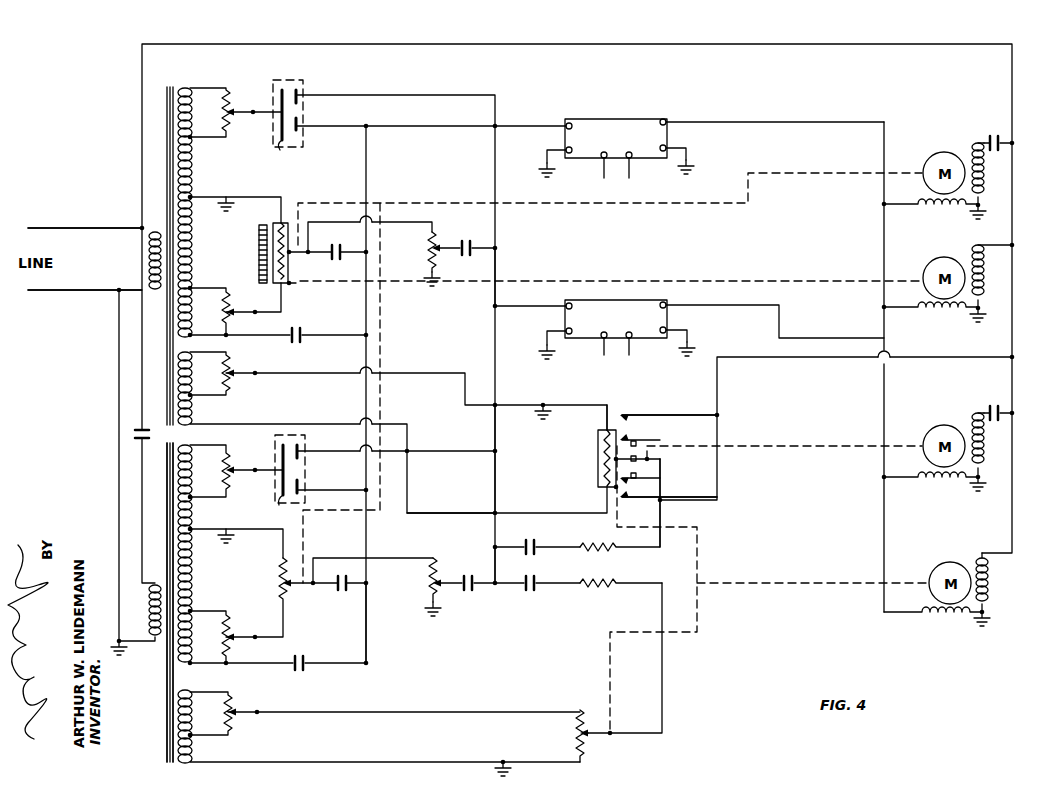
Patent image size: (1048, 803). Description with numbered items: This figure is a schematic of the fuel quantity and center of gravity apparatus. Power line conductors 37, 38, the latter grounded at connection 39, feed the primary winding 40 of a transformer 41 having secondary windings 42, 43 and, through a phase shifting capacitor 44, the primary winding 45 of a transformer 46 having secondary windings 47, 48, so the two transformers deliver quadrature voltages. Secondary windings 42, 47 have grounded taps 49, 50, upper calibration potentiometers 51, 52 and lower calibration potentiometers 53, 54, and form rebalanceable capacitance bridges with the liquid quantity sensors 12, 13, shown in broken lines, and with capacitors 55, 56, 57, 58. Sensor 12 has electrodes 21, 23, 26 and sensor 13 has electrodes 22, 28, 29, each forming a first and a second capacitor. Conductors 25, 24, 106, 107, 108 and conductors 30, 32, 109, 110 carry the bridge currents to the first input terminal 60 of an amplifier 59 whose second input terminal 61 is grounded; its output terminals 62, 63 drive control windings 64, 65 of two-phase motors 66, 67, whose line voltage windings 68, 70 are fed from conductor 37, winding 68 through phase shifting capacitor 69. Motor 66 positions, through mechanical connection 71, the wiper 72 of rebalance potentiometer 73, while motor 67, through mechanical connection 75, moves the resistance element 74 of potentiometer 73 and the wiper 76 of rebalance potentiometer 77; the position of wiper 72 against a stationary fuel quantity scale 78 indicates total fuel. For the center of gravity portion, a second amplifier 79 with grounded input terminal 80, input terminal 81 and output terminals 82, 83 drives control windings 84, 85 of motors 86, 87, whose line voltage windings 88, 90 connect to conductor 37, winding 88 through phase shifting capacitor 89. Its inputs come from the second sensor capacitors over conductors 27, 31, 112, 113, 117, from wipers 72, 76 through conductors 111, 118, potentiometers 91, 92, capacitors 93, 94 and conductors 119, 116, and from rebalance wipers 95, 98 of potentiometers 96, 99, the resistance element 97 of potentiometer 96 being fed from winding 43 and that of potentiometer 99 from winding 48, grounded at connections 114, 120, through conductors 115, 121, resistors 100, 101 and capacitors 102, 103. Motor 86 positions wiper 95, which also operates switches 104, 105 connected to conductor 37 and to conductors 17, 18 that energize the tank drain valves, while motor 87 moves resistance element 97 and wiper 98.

The liquid quantity sensor 12 is at (312, 84).
The liquid quantity sensor 13 is at (316, 448).
The electrical conductor 17 is at (666, 444).
The electrical conductor 18 is at (670, 478).
The electrode 21 is at (289, 152).
The electrode 22 is at (272, 484).
The electrode 23 is at (304, 124).
The conductor 24 is at (322, 128).
The conductor 25 is at (242, 114).
The electrode 26 is at (296, 80).
The conductor 27 is at (361, 95).
The electrode 28 is at (310, 490).
The electrode 29 is at (310, 452).
The conductor 30 is at (248, 470).
The conductor 31 is at (426, 452).
The conductor 32 is at (344, 488).
The power line conductor 37 is at (42, 228).
The power line conductor 38 is at (42, 290).
The ground connection 39 is at (124, 648).
The primary winding 40 is at (148, 255).
The transformer 41 is at (163, 82).
The first secondary winding 42 is at (191, 96).
The second secondary winding 43 is at (196, 418).
The phase shifting capacitor 44 is at (132, 432).
The primary winding 45 is at (148, 614).
The transformer 46 is at (160, 690).
The first secondary winding 47 is at (190, 450).
The second secondary winding 48 is at (196, 740).
The tap 49 is at (226, 197).
The tap 50 is at (224, 529).
The calibration potentiometer 51 is at (233, 90).
The calibration potentiometer 52 is at (238, 454).
The calibration potentiometer 53 is at (238, 290).
The calibration potentiometer 54 is at (232, 628).
The capacitor 55 is at (335, 252).
The capacitor 56 is at (310, 328).
The capacitor 57 is at (342, 590).
The capacitor 58 is at (306, 661).
The amplifier 59 is at (610, 118).
The first input terminal 60 is at (566, 124).
The second input terminal 61 is at (566, 148).
The output terminal 62 is at (664, 148).
The output terminal 63 is at (666, 120).
The control winding 64 is at (922, 208).
The control winding 65 is at (926, 312).
The two phase motor 66 is at (940, 150).
The two phase motor 67 is at (929, 262).
The line voltage winding 68 is at (978, 194).
The phase shifting capacitor 69 is at (987, 140).
The line voltage winding 70 is at (978, 298).
The mechanical connection 71 is at (531, 206).
The movable wiper 72 is at (296, 252).
The rebalance potentiometer 73 is at (286, 212).
The resistance element 74 is at (296, 283).
The mechanical connection 75 is at (538, 280).
The potentiometer wiper 76 is at (292, 586).
The rebalance potentiometer 77 is at (292, 552).
The fuel quantity scale 78 is at (258, 250).
The second amplifier 79 is at (610, 300).
The input terminal 80 is at (568, 332).
The second input terminal 81 is at (565, 306).
The output terminal 82 is at (666, 330).
The output terminal 83 is at (666, 305).
The control winding 84 is at (948, 482).
The control winding 85 is at (948, 620).
The two phase motor 86 is at (940, 420).
The two phase motor 87 is at (939, 558).
The line voltage winding 88 is at (978, 465).
The phase shifting capacitor 89 is at (987, 411).
The line voltage winding 90 is at (986, 592).
The potentiometer 91 is at (442, 238).
The potentiometer 92 is at (443, 574).
The capacitor 93 is at (461, 256).
The capacitor 94 is at (464, 590).
The potentiometer wiper 95 is at (600, 448).
The potentiometer 96 is at (598, 428).
The resistance element 97 is at (602, 478).
The potentiometer wiper 98 is at (596, 738).
The potentiometer 99 is at (571, 738).
The resistor 100 is at (588, 546).
The resistor 101 is at (584, 583).
The capacitor 102 is at (526, 546).
The capacitor 103 is at (526, 584).
The switch 104 is at (634, 496).
The switch 105 is at (634, 423).
The conductor 106 is at (412, 128).
The conductor 107 is at (368, 314).
The conductor 108 is at (368, 180).
The conductor 109 is at (370, 394).
The conductor 110 is at (370, 539).
The conductor 111 is at (385, 226).
The conductor 112 is at (494, 300).
The conductor 113 is at (499, 308).
The ground connection 114 is at (540, 416).
The conductor 115 is at (664, 512).
The conductor 116 is at (496, 476).
The conductor 117 is at (496, 442).
The conductor 118 is at (373, 559).
The conductor 119 is at (496, 567).
The ground connection 120 is at (506, 766).
The conductor 121 is at (662, 695).